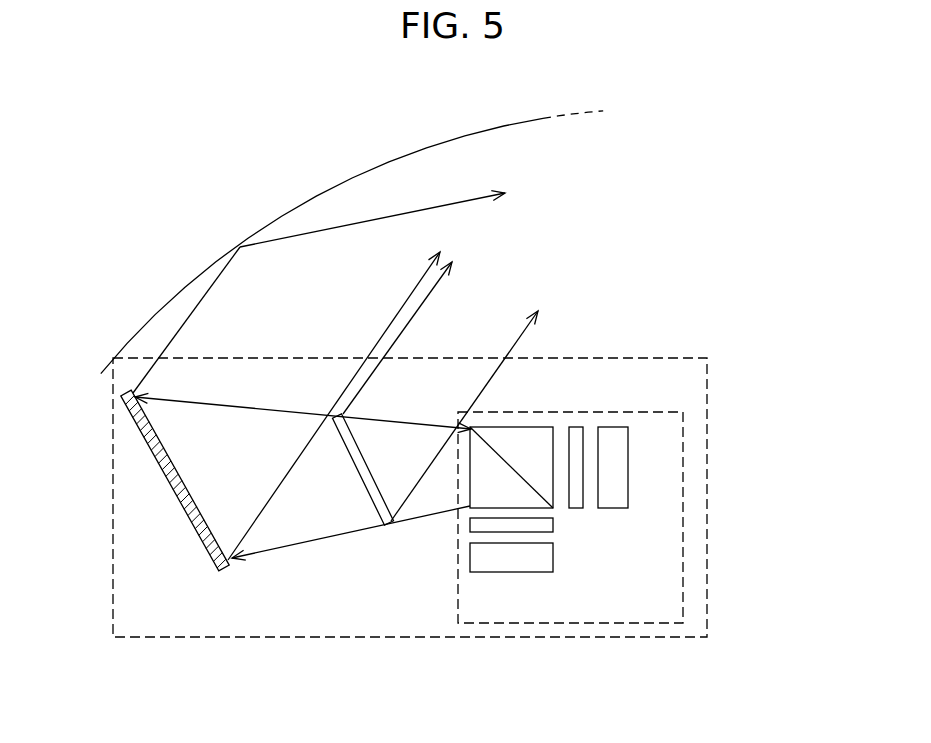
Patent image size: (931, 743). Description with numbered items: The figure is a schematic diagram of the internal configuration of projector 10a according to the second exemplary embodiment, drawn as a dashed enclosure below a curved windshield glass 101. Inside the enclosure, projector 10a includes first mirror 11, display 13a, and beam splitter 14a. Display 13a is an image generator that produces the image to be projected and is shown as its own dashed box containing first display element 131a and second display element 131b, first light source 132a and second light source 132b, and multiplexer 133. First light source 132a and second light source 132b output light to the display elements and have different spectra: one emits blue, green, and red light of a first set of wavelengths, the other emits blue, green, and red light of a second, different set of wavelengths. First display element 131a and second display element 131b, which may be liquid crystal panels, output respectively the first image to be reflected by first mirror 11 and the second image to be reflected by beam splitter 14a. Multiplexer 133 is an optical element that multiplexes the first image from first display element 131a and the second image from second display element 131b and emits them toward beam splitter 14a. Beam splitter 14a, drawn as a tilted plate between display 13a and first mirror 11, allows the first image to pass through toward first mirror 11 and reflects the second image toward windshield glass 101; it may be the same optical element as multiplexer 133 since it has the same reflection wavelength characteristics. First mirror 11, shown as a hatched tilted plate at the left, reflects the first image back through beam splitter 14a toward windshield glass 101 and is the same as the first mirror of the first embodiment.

The windshield glass 101 is at (313, 197).
The projector 10a is at (317, 640).
The display 13a is at (683, 605).
The first mirror 11 is at (185, 513).
The beam splitter 14a is at (390, 527).
The multiplexer 133 is at (513, 426).
The first display element 131a is at (578, 427).
The first light source 132a is at (620, 427).
The second display element 131b is at (553, 525).
The second light source 132b is at (553, 558).